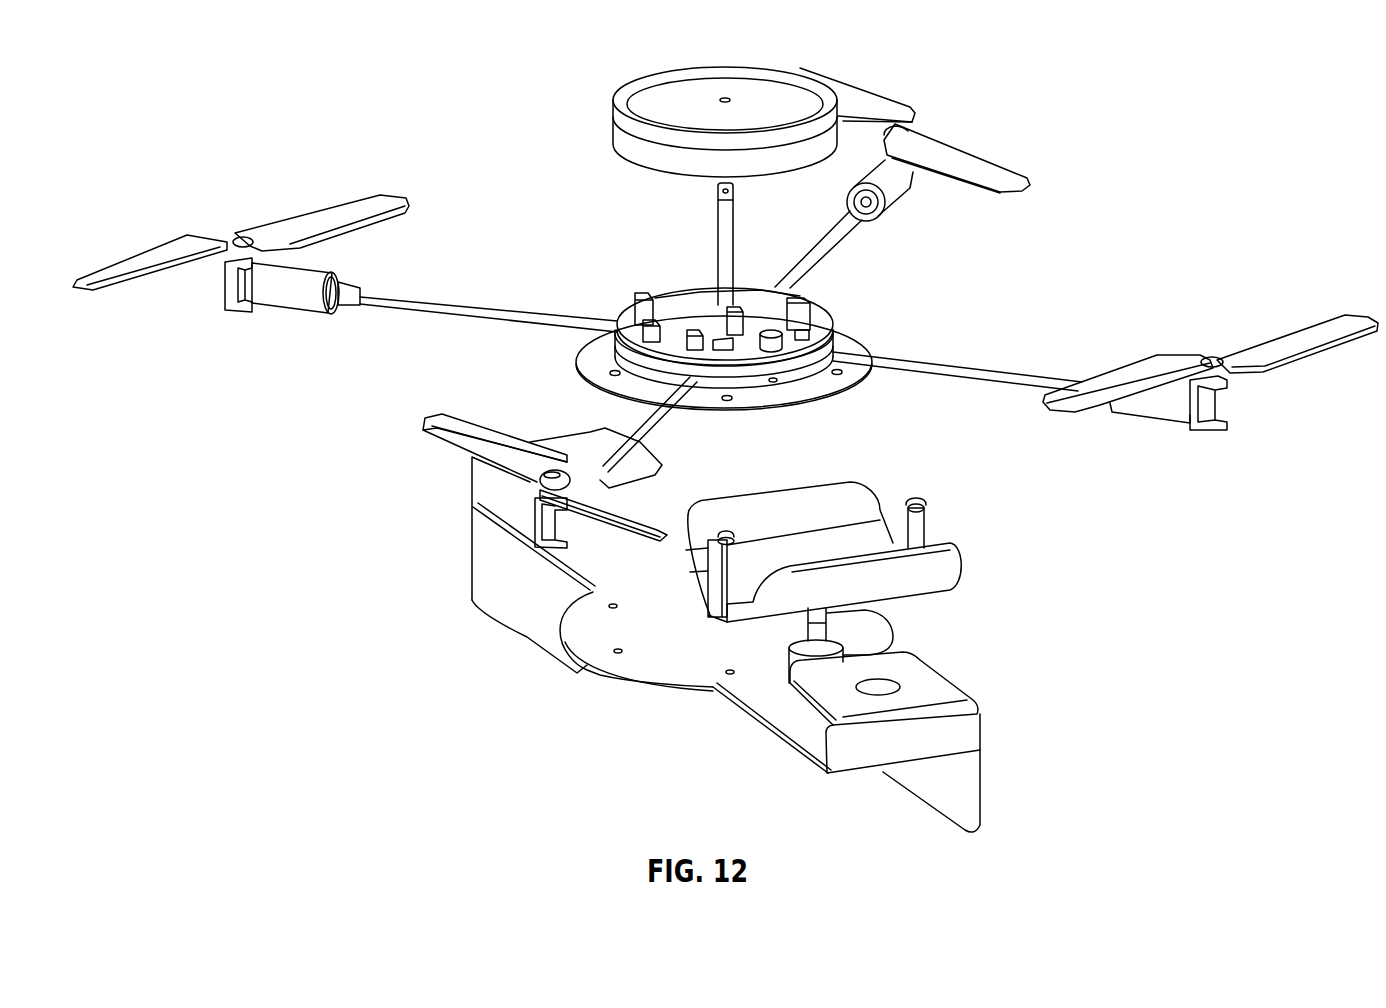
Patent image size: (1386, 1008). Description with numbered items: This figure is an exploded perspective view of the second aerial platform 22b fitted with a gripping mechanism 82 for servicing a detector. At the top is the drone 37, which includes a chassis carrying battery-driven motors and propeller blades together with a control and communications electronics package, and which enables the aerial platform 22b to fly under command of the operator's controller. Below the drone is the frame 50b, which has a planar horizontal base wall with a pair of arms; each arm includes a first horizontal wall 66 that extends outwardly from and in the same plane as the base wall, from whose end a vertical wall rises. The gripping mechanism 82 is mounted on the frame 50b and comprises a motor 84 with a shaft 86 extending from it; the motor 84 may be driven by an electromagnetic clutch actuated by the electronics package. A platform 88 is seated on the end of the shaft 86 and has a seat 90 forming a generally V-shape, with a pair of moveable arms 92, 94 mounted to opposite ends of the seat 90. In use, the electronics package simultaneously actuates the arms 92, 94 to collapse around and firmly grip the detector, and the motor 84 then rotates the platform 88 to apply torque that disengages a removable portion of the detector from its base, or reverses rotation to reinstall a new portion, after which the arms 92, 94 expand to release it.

The aerial platform 22b is at (388, 613).
The drone 37 is at (888, 313).
The frame 50b is at (656, 684).
The first horizontal wall 66 is at (800, 720).
The gripping mechanism 82 is at (980, 564).
The motor 84 is at (843, 660).
The shaft 86 is at (827, 623).
The platform 88 is at (893, 491).
The seat 90 is at (815, 503).
The moveable arm 92 is at (925, 530).
The moveable arm 94 is at (708, 571).